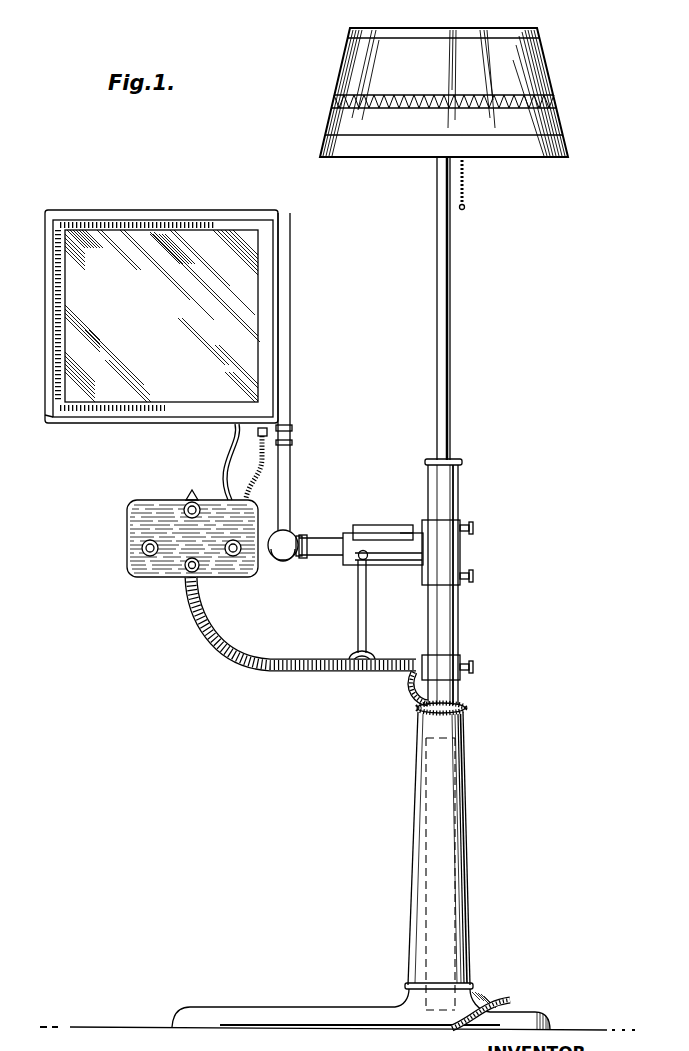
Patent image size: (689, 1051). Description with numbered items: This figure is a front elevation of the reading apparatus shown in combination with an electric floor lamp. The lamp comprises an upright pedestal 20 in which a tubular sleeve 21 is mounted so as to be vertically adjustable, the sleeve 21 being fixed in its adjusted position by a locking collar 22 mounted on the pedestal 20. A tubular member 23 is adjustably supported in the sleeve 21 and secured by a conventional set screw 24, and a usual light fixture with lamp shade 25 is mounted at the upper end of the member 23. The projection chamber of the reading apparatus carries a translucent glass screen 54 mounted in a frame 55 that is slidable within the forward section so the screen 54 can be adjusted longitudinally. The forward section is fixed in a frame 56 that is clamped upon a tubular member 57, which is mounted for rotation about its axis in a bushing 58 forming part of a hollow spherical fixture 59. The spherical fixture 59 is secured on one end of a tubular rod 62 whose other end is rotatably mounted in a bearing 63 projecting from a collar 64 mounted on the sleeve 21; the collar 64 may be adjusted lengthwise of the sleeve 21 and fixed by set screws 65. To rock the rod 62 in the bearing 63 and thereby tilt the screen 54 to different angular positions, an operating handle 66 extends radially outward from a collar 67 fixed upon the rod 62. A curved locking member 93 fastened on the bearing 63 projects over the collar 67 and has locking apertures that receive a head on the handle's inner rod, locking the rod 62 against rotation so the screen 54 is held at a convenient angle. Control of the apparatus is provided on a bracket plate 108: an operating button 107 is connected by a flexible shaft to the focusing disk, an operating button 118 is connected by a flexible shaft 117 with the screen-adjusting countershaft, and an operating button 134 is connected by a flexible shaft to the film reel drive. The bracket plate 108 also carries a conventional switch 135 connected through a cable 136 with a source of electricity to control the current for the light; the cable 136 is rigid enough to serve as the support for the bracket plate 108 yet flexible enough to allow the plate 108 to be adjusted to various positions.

The upright pedestal 20 is at (469, 886).
The tubular sleeve 21 is at (459, 627).
The locking collar 22 is at (466, 708).
The tubular member 23 is at (452, 400).
The set screw 24 is at (456, 466).
The lamp shade 25 is at (388, 148).
The screen 54 is at (162, 316).
The frame 55 is at (220, 212).
The frame 56 is at (75, 424).
The tubular member 57 is at (291, 452).
The bushing 58 is at (296, 534).
The hollow spherical fixture 59 is at (286, 561).
The tubular rod 62 is at (330, 560).
The bearing 63 is at (415, 566).
The collar 64 is at (461, 552).
The set screws 65 is at (474, 528).
The operating handle 66 is at (357, 632).
The collar 67 is at (368, 559).
The curved locking member 93 is at (383, 527).
The operating button 107 is at (130, 554).
The bracket plate 108 is at (129, 520).
The flexible shaft 117 is at (249, 462).
The operating button 118 is at (257, 560).
The operating button 134 is at (185, 500).
The switch 135 is at (187, 572).
The cable 136 is at (262, 672).